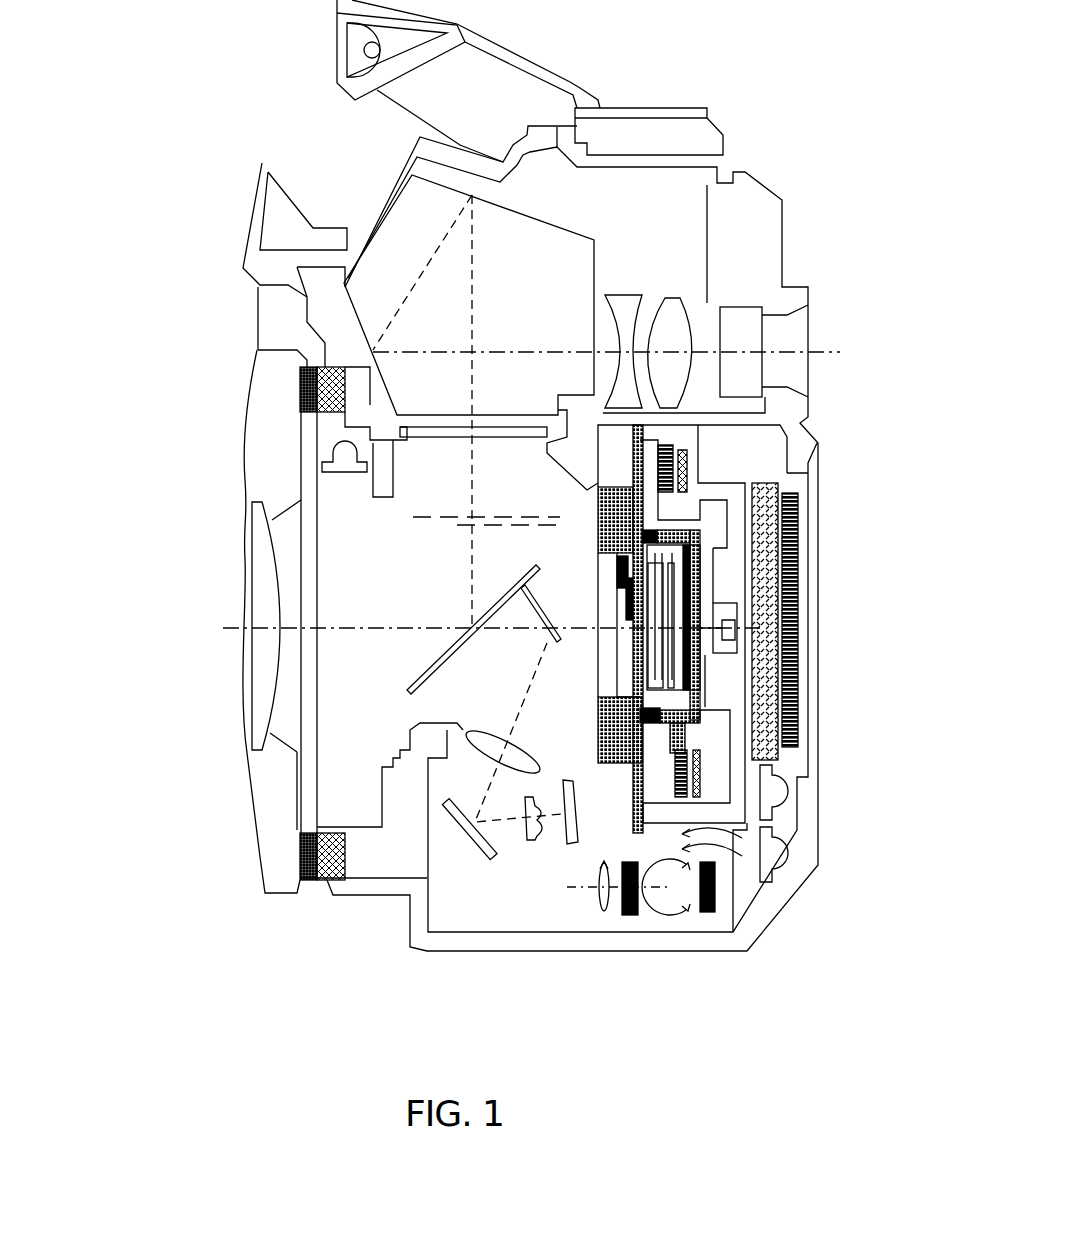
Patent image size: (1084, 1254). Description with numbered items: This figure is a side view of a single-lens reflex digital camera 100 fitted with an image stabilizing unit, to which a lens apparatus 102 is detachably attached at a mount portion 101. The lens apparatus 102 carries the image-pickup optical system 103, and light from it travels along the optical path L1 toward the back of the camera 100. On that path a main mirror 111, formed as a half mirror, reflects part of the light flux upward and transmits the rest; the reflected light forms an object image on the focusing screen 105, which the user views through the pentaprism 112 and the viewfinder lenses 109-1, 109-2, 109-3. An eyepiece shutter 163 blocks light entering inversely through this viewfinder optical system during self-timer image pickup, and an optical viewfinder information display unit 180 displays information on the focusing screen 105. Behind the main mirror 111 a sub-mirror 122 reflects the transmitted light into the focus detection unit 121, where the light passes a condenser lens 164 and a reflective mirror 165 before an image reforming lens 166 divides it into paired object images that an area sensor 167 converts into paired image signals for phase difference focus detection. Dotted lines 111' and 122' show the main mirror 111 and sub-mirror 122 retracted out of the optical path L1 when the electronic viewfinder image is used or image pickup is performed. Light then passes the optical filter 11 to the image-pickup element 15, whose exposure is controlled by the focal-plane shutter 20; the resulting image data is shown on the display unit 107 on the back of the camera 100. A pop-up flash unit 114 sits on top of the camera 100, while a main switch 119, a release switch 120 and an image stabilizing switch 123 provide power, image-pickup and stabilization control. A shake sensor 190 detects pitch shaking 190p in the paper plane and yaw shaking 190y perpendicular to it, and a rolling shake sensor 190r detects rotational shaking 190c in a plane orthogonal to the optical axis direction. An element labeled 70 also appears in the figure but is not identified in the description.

The single-lens reflex digital camera 100 is at (770, 923).
The mount portion 101 is at (323, 873).
The lens apparatus 102 is at (272, 363).
The image-pickup optical system 103 is at (258, 733).
The focusing screen 105 is at (298, 408).
The display unit 107 is at (790, 542).
The viewfinder lens 109-1 is at (628, 297).
The viewfinder lens 109-2 is at (671, 297).
The viewfinder lens 109-3 is at (743, 303).
The main mirror 111 is at (433, 631).
The retracted position of main mirror 111' is at (360, 492).
The pentaprism 112 is at (405, 218).
The pop-up flash unit 114 is at (350, 42).
The main switch 119 is at (777, 853).
The release switch 120 is at (407, 443).
The focus detection unit 121 is at (430, 840).
The sub-mirror 122 is at (522, 703).
The retracted position of sub-mirror 122' is at (346, 540).
The image stabilizing switch 123 is at (777, 798).
The eyepiece shutter 163 is at (713, 225).
The condenser lens 164 is at (467, 737).
The reflective mirror 165 is at (480, 837).
The image reforming lens 166 is at (533, 837).
The area sensor 167 is at (565, 847).
The optical viewfinder information display unit 180 is at (568, 418).
The shake sensor 190 is at (710, 917).
The rotational (rolling) shaking 190c is at (602, 910).
The pitch shaking 190p is at (688, 840).
The rolling shake sensor 190r is at (637, 917).
The yaw shaking 190y is at (720, 850).
The optical filter 11 is at (672, 697).
The image-pickup element 15 is at (673, 580).
The focal-plane shutter 20 is at (623, 593).
The drive unit 70 is at (771, 457).
The optical path L1 is at (297, 630).